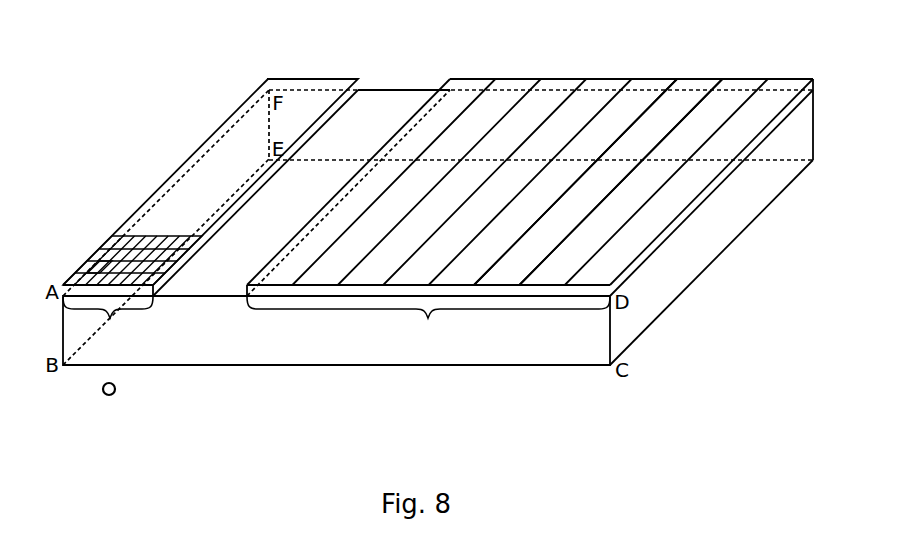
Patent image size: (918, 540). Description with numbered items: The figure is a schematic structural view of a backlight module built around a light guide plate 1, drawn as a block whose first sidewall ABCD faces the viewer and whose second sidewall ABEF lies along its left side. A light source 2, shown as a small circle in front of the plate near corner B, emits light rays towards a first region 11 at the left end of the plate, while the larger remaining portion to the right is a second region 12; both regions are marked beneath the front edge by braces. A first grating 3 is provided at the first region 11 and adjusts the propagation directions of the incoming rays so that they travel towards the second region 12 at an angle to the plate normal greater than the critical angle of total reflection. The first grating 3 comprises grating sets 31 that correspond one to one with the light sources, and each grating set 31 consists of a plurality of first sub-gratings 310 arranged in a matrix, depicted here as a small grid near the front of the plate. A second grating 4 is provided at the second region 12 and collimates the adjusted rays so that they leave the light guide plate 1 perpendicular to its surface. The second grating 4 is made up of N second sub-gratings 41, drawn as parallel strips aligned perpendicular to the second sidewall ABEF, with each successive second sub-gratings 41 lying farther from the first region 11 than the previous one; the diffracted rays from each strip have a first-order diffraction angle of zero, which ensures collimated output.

The light guide plate 1 is at (303, 367).
The light source 2 is at (109, 396).
The first grating 3 is at (311, 78).
The grating set 31 is at (124, 248).
The first sub-grating 310 is at (88, 268).
The second grating 4 is at (593, 79).
The second sub-grating 41 is at (683, 97).
The first region 11 is at (108, 320).
The second region 12 is at (428, 320).